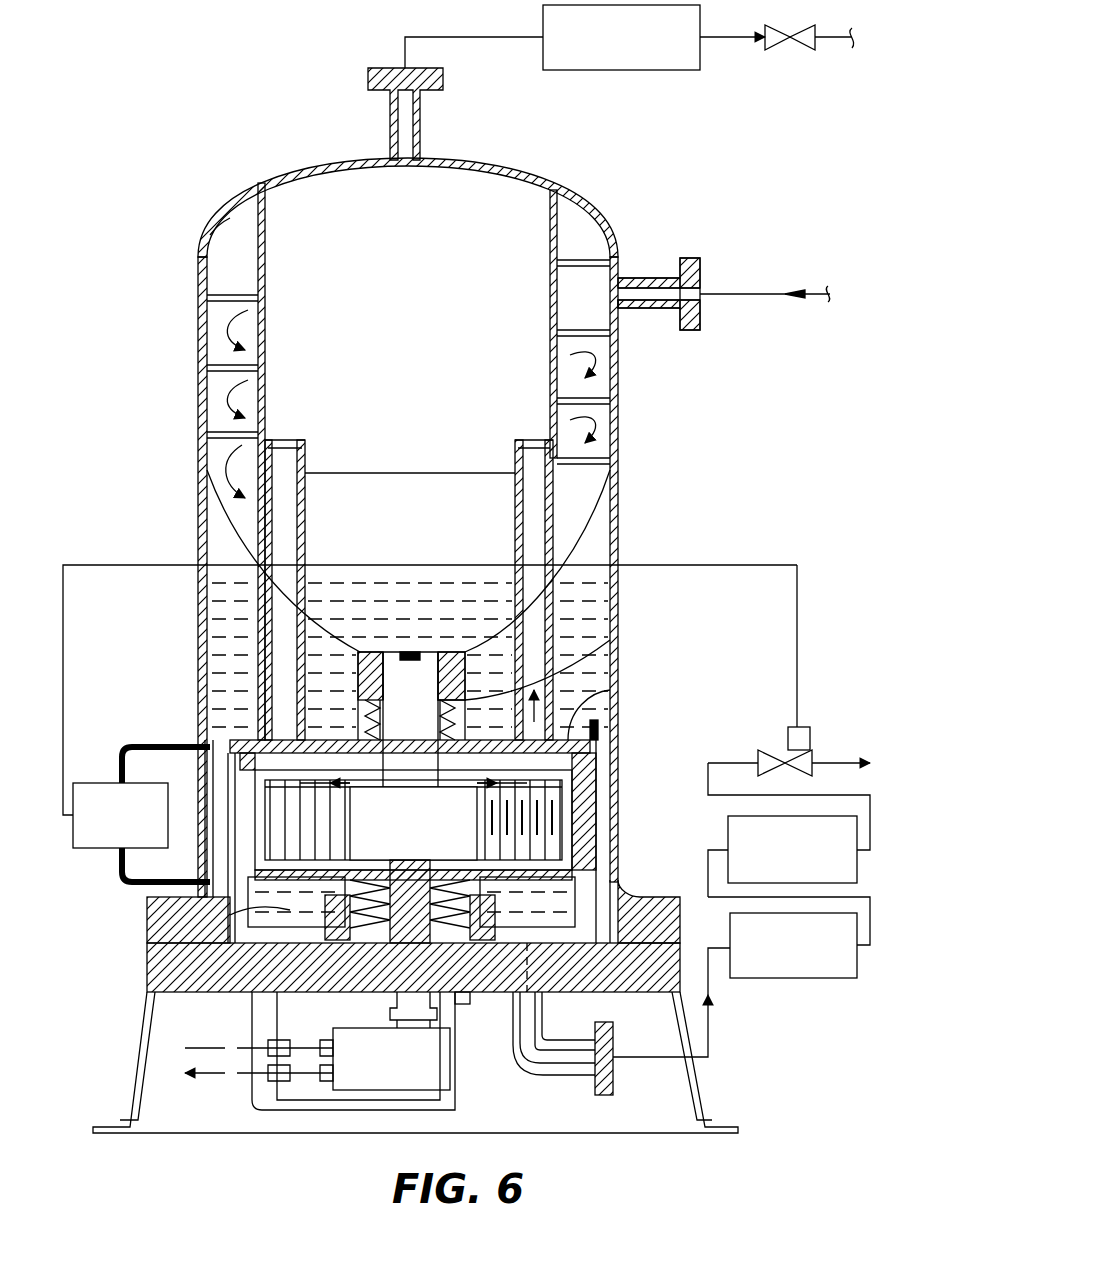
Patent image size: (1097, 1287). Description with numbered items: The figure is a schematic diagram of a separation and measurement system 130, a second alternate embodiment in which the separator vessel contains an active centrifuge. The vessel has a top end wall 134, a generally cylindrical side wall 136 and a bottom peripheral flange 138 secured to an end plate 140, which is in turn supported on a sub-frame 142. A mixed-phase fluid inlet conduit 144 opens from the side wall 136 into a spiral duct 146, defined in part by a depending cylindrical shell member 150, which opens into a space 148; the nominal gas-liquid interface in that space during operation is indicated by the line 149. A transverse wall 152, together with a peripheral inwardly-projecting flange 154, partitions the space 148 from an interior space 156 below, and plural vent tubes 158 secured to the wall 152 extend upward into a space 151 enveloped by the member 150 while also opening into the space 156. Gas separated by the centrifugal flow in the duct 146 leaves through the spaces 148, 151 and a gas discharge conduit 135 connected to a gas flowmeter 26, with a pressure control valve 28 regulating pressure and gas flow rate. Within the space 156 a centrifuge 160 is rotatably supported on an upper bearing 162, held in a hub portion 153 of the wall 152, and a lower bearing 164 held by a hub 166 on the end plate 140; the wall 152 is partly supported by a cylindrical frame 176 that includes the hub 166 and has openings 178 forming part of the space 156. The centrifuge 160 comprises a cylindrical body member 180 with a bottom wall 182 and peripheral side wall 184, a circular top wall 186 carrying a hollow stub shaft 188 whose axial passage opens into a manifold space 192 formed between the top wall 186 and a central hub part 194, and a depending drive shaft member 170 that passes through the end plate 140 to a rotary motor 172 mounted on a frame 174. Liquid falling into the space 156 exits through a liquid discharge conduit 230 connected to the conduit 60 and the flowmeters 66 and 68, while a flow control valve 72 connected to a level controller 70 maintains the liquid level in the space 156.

The gas flowmeter 26 is at (650, 70).
The pressure control valve 28 is at (798, 50).
The conduit 60 is at (709, 1040).
The flowmeter 66 is at (790, 979).
The flowmeter 68 is at (728, 836).
The level controller 70 is at (100, 782).
The flow control valve 72 is at (770, 752).
The separation and measurement system 130 is at (682, 420).
The top end wall 134 is at (330, 163).
The gas discharge conduit 135 is at (420, 136).
The side wall 136 is at (198, 397).
The bottom peripheral flange 138 is at (150, 900).
The end plate 140 is at (147, 968).
The sub-frame 142 is at (137, 1050).
The mixed-phase fluid inlet conduit 144 is at (640, 278).
The spiral duct 146 is at (216, 238).
The space 148 is at (433, 541).
The line 149 is at (603, 528).
The cylindrical shell member 150 is at (550, 278).
The space 151 is at (432, 336).
The transverse wall 152 is at (570, 695).
The hub portion 153 is at (360, 652).
The peripheral inwardly-projecting flange 154 is at (598, 724).
The interior space 156 is at (240, 1000).
The vent tubes 158 is at (305, 488).
The centrifuge 160 is at (578, 826).
The upper bearing 162 is at (558, 650).
The lower bearing 164 is at (462, 1002).
The hub 166 is at (397, 1000).
The drive shaft member 170 is at (400, 1003).
The rotary motor 172 is at (403, 1070).
The frame 174 is at (270, 1100).
The cylindrical frame 176 is at (600, 877).
The openings 178 is at (232, 910).
The body member 180 is at (590, 785).
The bottom wall 182 is at (411, 902).
The peripheral side wall 184 is at (572, 848).
The top wall 186 is at (350, 775).
The stub shaft 188 is at (422, 650).
The manifold space 192 is at (425, 775).
The hub part 194 is at (413, 823).
The liquid discharge conduit 230 is at (545, 1078).